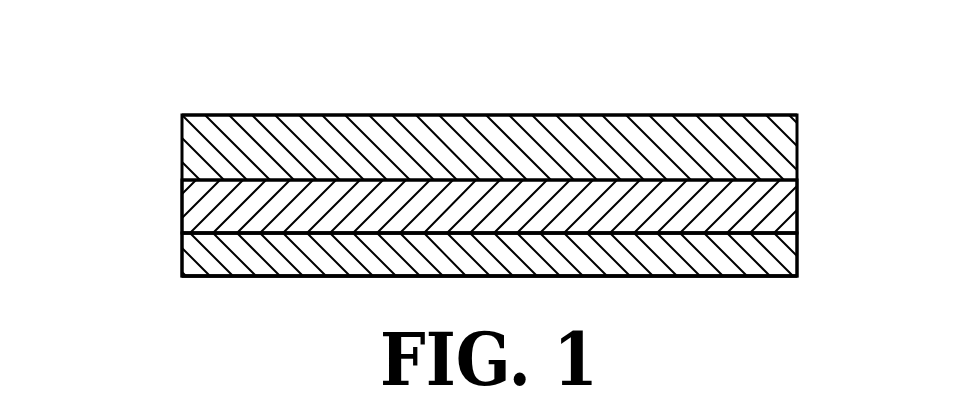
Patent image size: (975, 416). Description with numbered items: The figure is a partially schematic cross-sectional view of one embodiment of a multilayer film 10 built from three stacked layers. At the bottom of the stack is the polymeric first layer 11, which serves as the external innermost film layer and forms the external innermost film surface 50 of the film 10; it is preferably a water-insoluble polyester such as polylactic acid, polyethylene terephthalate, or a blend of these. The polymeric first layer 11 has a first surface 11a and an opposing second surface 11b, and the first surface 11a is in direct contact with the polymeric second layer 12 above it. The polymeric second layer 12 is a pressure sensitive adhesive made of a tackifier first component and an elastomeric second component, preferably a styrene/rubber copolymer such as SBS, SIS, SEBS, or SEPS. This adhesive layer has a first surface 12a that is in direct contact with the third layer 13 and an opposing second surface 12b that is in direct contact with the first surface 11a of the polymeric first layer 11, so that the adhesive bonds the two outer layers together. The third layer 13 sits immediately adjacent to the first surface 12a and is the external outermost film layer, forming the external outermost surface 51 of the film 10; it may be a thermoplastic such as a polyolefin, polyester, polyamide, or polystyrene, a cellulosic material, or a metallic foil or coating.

The film 10 is at (505, 112).
The polymeric first layer 11 is at (798, 257).
The first surface 11a is at (798, 200).
The second surface 11b is at (790, 276).
The polymeric second layer 12 is at (182, 216).
The first surface 12a is at (182, 154).
The second surface 12b is at (182, 265).
The third layer 13 is at (798, 155).
The external innermost film surface 50 is at (667, 277).
The external outermost surface 51 is at (278, 114).